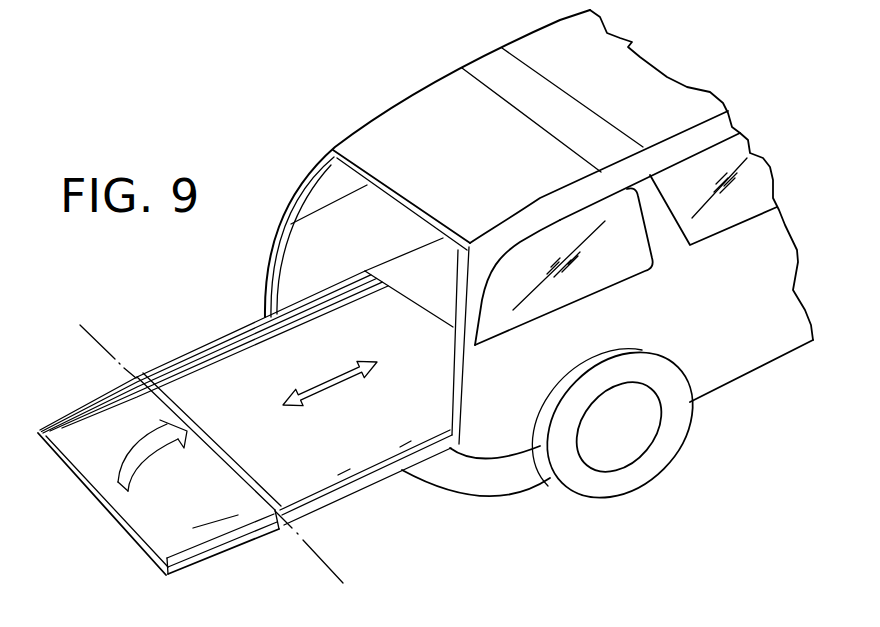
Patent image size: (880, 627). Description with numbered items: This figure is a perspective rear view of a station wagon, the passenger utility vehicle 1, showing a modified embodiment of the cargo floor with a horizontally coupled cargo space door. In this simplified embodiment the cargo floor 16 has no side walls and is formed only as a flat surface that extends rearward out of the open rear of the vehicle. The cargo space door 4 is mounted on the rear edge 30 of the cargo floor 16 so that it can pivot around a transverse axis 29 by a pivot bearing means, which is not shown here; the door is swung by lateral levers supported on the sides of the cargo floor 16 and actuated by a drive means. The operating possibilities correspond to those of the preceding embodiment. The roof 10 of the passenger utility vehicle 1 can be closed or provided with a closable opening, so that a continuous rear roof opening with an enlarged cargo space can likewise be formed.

The passenger utility vehicle 1 is at (243, 110).
The roof 10 is at (437, 120).
The cargo floor 16 is at (240, 387).
The rear edge 30 is at (152, 390).
The transverse axis 29 is at (315, 555).
The cargo space door 4 is at (88, 517).